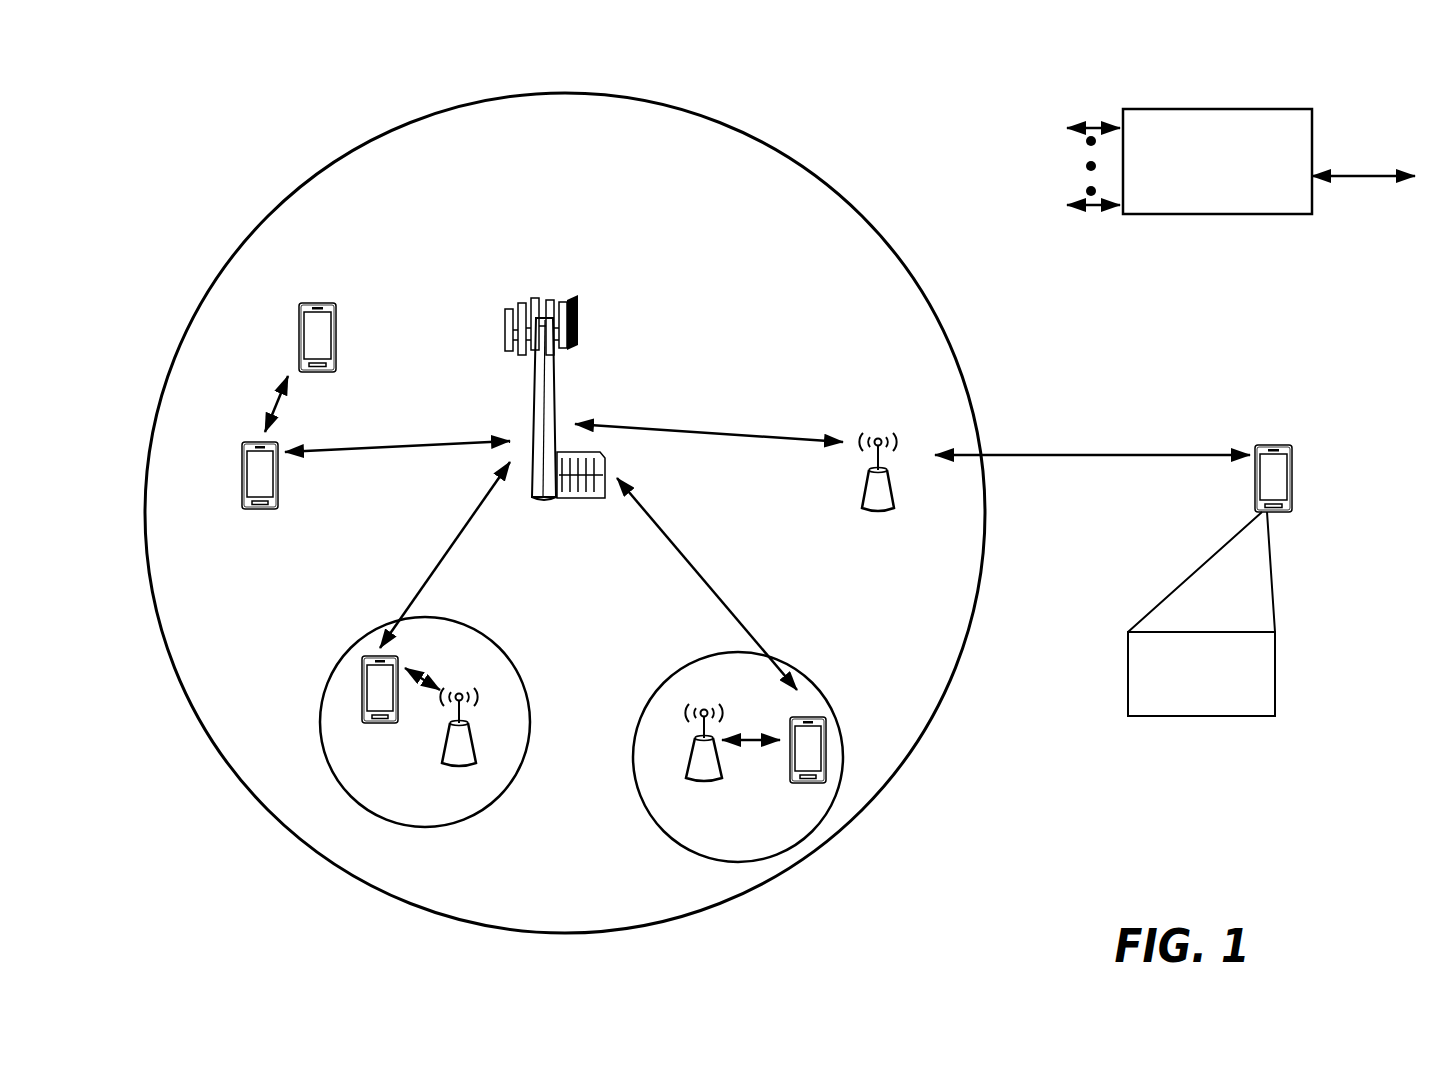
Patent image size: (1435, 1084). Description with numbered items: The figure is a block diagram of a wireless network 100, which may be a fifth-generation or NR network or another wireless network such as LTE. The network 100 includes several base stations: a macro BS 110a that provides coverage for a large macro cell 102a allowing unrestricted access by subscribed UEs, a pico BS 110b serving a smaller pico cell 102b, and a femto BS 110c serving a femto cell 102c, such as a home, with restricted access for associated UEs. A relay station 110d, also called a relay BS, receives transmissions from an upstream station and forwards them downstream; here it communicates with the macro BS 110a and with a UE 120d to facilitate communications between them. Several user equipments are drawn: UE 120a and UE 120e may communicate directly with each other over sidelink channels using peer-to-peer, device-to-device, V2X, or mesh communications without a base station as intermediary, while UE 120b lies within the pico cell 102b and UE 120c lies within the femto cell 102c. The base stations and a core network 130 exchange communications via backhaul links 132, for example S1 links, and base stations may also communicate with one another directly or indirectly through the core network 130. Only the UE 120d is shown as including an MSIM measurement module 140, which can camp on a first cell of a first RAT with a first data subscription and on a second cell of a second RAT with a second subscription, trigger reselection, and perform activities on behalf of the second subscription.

The wireless network 100 is at (226, 135).
The macro cell 102a is at (843, 193).
The pico cell 102b is at (514, 657).
The femto cell 102c is at (668, 678).
The macro BS 110a is at (550, 282).
The pico BS 110b is at (478, 755).
The femto BS 110c is at (686, 770).
The relay station 110d is at (878, 436).
The UE 120a is at (241, 466).
The UE 120b is at (377, 724).
The UE 120c is at (794, 784).
The UE 120d is at (1290, 516).
The UE 120e is at (299, 322).
The core network 130 is at (1192, 109).
The backhaul links 132 is at (1090, 124).
The MSIM measurement module 140 is at (1200, 718).